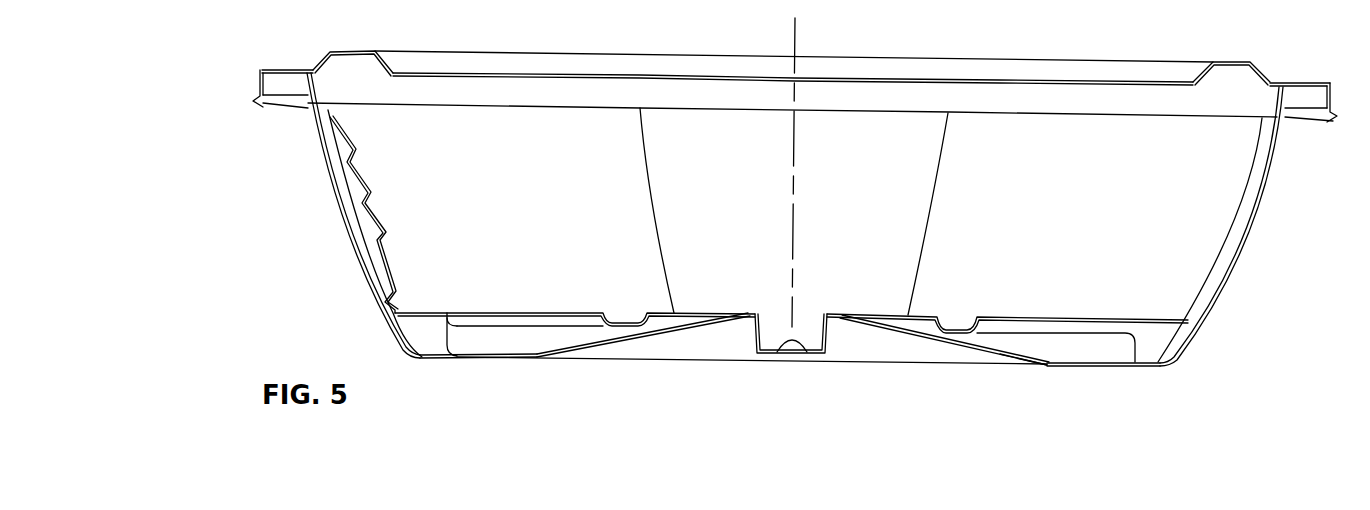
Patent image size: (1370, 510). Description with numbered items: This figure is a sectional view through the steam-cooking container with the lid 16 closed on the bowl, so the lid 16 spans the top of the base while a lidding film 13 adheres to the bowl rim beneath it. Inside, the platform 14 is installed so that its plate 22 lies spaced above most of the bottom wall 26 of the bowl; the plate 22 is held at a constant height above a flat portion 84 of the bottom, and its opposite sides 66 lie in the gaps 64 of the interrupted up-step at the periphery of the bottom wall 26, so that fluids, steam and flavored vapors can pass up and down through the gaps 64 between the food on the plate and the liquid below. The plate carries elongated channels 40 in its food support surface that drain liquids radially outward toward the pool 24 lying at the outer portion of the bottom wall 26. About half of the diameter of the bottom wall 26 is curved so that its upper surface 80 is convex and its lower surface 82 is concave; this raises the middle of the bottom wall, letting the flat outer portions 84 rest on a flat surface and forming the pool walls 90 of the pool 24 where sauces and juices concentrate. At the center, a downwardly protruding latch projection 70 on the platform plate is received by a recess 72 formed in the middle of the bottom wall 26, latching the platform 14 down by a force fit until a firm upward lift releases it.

The lidding film 13 is at (348, 73).
The lid 16 is at (1040, 80).
The channels 40 is at (350, 175).
The platform 14 is at (472, 313).
The plate 22 is at (1033, 318).
The opposite sides of the plate 66 is at (1157, 320).
The gaps 64 is at (423, 327).
The flat outer portions of the bottom wall 84 is at (431, 358).
The pool 24 is at (488, 340).
The pool walls 90 is at (593, 340).
The latch projection 70 is at (772, 332).
The recess 72 is at (810, 332).
The bottom wall 26 is at (965, 342).
The lower surface 82 is at (1030, 345).
The upper surface 80 is at (1030, 345).